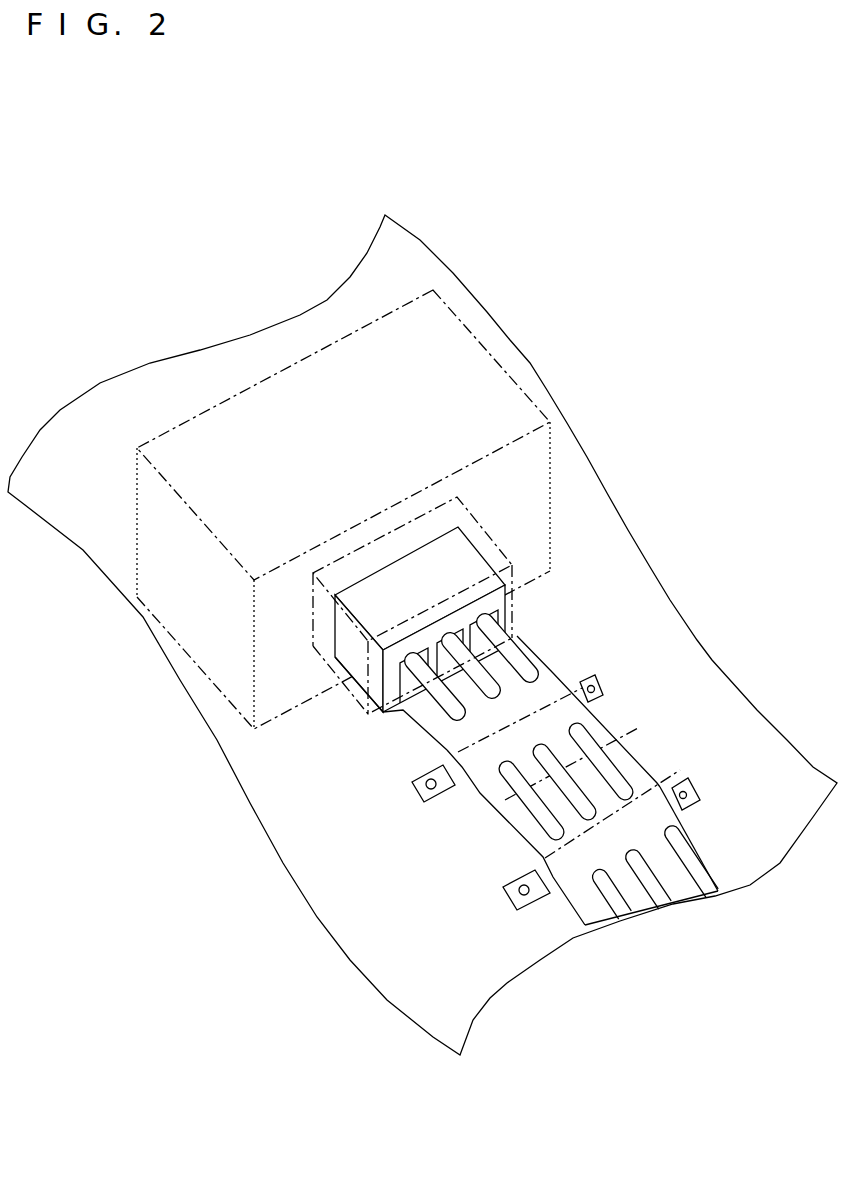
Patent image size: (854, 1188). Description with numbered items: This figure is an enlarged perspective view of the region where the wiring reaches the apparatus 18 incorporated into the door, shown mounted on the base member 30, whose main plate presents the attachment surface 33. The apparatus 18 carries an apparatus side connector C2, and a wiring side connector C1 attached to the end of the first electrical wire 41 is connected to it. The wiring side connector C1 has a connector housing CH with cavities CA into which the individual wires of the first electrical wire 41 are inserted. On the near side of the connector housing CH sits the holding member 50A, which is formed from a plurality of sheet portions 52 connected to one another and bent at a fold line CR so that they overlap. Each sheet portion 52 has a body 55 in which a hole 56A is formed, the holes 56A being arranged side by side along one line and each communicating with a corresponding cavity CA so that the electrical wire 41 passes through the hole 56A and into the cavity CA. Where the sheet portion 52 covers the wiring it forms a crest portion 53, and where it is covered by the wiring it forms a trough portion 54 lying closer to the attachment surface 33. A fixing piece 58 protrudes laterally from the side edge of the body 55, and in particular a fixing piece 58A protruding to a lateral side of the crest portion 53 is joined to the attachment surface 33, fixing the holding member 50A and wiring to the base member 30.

The apparatus 18 is at (511, 378).
The base member 30 is at (422, 635).
The attachment surface 33 is at (662, 614).
The first electrical wire 41 is at (714, 890).
The holding member 50A is at (406, 724).
The sheet portion 52 is at (555, 814).
The crest portion 53 is at (444, 752).
The trough portion 54 is at (430, 717).
The body 55 is at (688, 838).
The hole 56A is at (628, 881).
The fixing piece 58 is at (535, 797).
The fixing piece 58A is at (428, 788).
The wiring side connector C1 is at (362, 716).
The apparatus side connector C2 is at (490, 535).
The connector housing CH is at (508, 600).
The cavity CA is at (512, 626).
The fold line CR is at (478, 750).